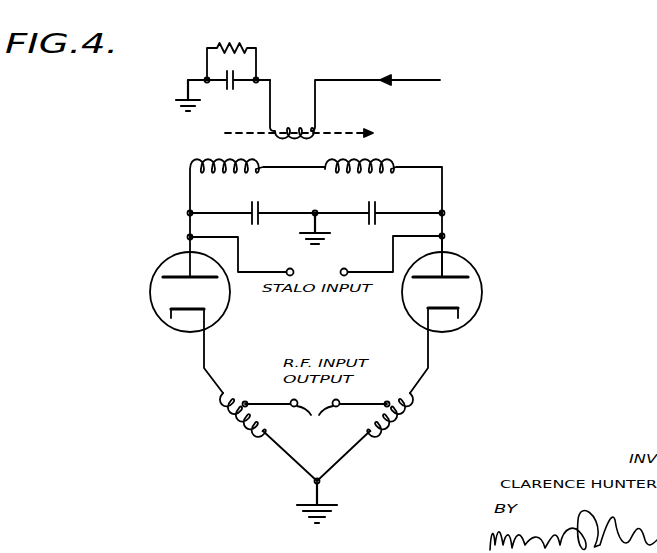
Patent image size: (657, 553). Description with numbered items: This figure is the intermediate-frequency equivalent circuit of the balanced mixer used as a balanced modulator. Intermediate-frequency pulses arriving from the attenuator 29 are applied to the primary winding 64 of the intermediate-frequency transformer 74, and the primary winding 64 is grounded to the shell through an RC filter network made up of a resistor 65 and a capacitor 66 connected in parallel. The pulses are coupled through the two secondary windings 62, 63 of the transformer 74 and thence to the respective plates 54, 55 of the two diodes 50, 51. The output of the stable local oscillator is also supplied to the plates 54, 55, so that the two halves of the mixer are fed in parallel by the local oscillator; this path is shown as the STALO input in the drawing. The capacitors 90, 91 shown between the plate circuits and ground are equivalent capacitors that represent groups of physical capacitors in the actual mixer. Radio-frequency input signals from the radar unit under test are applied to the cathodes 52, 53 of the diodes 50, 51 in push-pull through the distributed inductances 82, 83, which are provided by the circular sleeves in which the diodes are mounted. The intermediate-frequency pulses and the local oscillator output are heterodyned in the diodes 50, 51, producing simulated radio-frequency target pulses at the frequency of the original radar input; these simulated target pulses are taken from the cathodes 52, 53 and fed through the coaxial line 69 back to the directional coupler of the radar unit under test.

The attenuator 29 is at (518, 82).
The diode 50 is at (151, 290).
The diode 51 is at (486, 292).
The cathode 52 is at (185, 313).
The cathode 53 is at (445, 313).
The plate 54 is at (178, 275).
The plate 55 is at (452, 276).
The secondary winding 62 is at (208, 158).
The secondary winding 63 is at (389, 164).
The primary winding 64 is at (294, 129).
The resistor of RC filter network 65 is at (267, 14).
The capacitor of RC filter network 66 is at (235, 87).
The coaxial line 69 is at (316, 420).
The intermediate-frequency transformer 74 is at (323, 128).
The distributed inductance 82 is at (384, 423).
The distributed inductance 83 is at (248, 420).
The capacitor 90 is at (240, 211).
The capacitor 91 is at (388, 212).